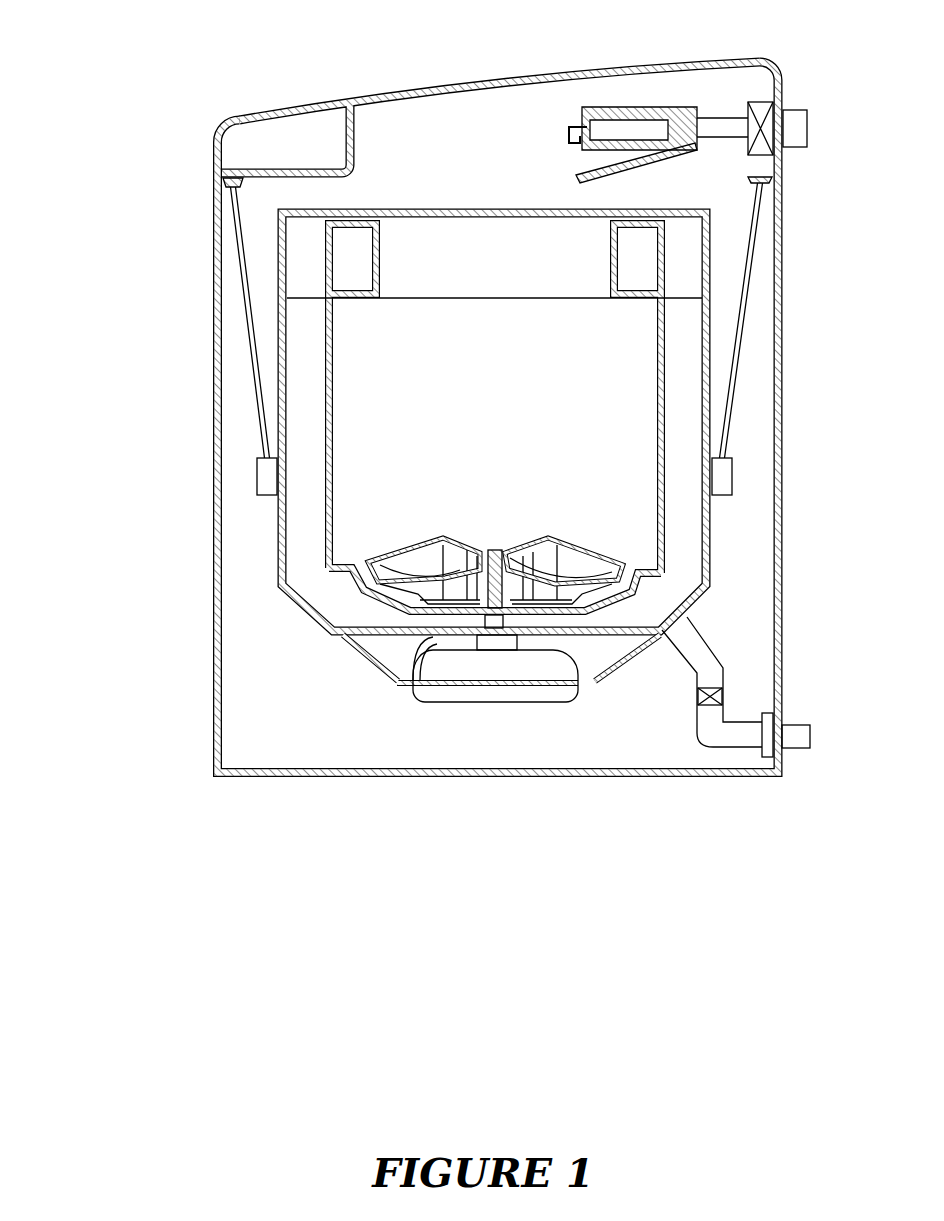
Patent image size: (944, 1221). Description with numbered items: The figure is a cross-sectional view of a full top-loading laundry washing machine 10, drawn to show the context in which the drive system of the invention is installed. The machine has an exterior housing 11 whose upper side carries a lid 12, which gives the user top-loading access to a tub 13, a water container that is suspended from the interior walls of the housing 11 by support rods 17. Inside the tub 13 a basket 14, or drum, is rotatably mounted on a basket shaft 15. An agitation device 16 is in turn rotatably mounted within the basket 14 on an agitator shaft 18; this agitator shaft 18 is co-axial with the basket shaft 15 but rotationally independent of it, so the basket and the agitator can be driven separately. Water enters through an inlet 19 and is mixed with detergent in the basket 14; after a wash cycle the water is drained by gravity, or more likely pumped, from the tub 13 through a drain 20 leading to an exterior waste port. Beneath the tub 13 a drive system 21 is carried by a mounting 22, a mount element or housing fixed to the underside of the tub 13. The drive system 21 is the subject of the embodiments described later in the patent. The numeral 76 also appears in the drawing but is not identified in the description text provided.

The laundry washing machine 10 is at (120, 170).
The exterior housing 11 is at (213, 480).
The lid 12 is at (433, 82).
The tub 13 is at (276, 328).
The basket 14 is at (668, 340).
The basket shaft 15 is at (415, 640).
The agitation device 16 is at (612, 545).
The support rods 17 is at (762, 270).
The agitator shaft 18 is at (450, 618).
The inlet 19 is at (800, 126).
The drain 20 is at (703, 658).
The drive system 21 is at (440, 696).
The mounting 22 is at (603, 650).
The drive shaft 76 is at (485, 553).